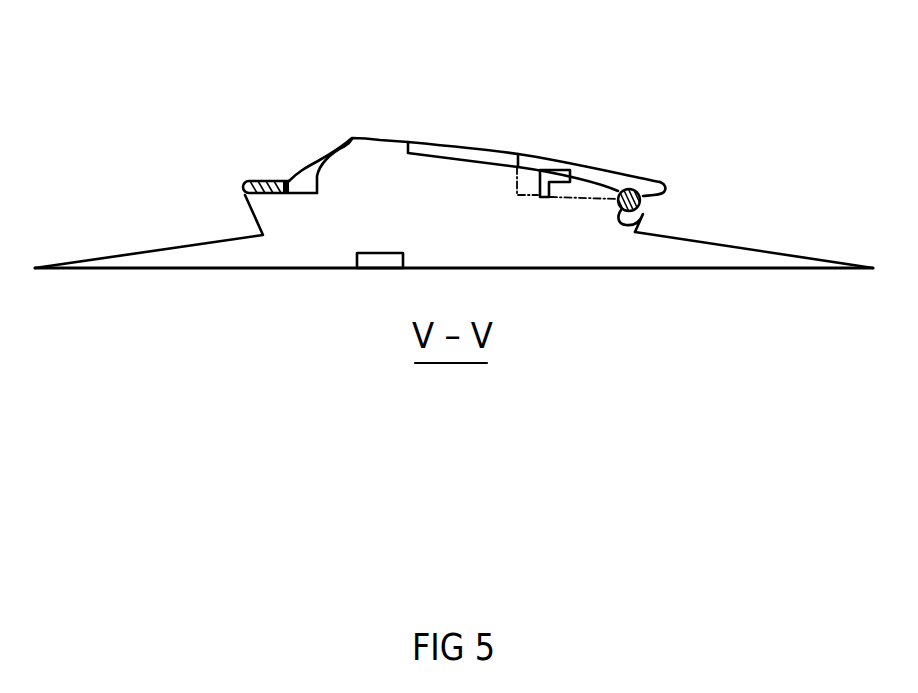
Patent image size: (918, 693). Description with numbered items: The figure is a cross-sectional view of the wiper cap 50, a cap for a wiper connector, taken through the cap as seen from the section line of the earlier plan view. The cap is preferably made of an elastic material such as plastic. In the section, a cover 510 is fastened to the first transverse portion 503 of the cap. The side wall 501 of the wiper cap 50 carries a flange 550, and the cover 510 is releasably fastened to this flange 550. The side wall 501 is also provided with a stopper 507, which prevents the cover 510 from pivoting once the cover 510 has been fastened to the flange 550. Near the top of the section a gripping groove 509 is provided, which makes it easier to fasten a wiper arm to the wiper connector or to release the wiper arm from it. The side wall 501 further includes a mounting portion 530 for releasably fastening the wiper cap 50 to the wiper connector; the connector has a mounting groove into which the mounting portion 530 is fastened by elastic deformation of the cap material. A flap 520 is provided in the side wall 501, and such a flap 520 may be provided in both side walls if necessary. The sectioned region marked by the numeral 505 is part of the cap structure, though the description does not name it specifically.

The wiper cap 50 is at (651, 298).
The side wall 501 is at (283, 250).
The first transverse portion 503 is at (665, 188).
The pivot shaft 505 is at (253, 178).
The stopper 507 is at (557, 169).
The gripping groove 509 is at (378, 141).
The cover 510 is at (597, 190).
The flap 520 is at (742, 258).
The mounting portion 530 is at (372, 263).
The flange 550 is at (472, 150).